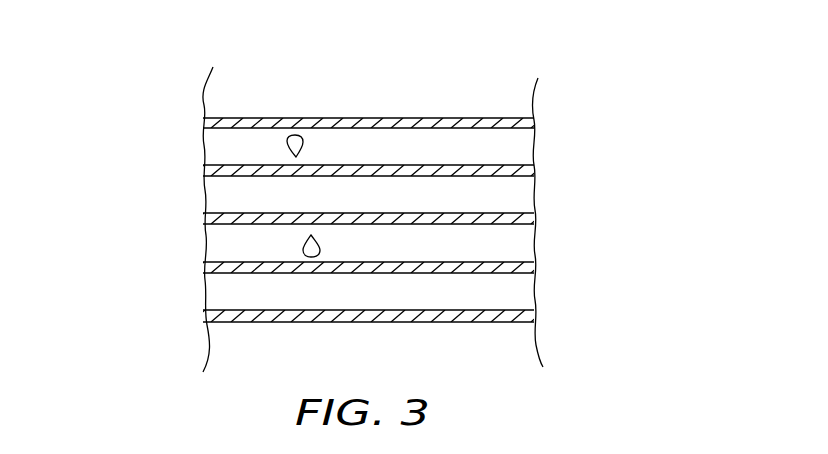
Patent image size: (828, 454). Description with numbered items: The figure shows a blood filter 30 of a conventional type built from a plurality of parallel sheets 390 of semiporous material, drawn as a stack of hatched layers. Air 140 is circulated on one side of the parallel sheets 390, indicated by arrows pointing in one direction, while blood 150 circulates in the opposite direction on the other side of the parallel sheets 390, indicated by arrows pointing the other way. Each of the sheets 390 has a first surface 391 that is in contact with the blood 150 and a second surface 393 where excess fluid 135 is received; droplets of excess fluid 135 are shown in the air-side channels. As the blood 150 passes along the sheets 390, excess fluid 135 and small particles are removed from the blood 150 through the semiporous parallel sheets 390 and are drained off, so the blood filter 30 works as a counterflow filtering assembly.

The blood filter 30 is at (503, 70).
The excess fluid 135 is at (295, 140).
The air 140 is at (410, 149).
The blood 150 is at (440, 197).
The parallel sheets 390 is at (533, 117).
The first surface 391 is at (250, 180).
The second surface 393 is at (490, 225).